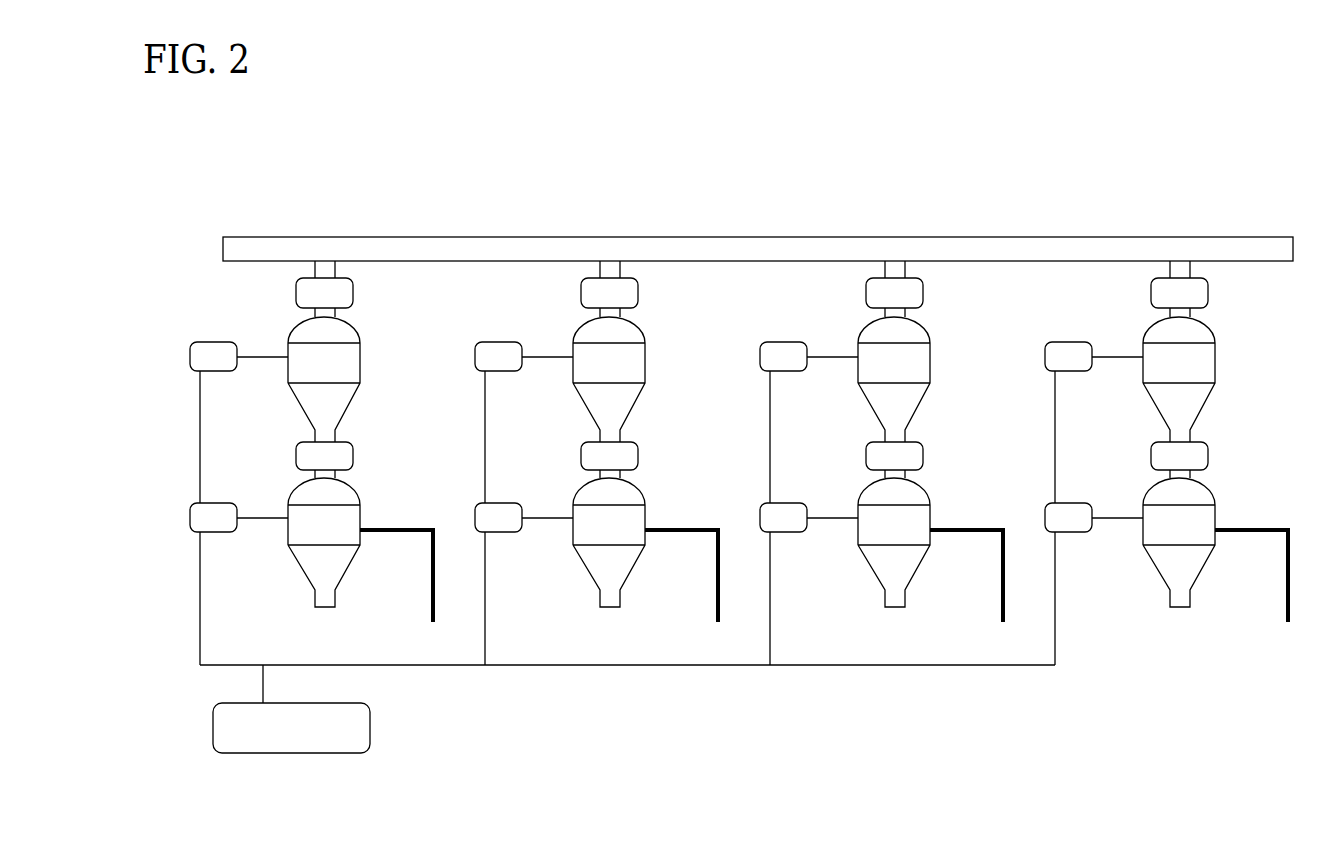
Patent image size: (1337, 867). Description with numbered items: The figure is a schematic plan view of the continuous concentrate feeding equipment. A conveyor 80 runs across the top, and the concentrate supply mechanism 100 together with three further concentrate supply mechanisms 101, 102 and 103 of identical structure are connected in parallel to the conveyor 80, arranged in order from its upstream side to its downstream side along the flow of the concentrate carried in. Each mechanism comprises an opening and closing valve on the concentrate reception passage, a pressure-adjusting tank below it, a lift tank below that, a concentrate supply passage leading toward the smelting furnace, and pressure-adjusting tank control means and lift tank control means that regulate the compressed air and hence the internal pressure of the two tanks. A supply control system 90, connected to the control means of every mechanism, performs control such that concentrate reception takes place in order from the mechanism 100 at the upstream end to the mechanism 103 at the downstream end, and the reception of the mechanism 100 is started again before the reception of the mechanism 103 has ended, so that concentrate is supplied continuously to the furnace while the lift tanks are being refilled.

The conveyor 80 is at (488, 245).
The concentrate supply mechanism 100 is at (276, 321).
The concentrate supply mechanism 101 is at (596, 463).
The concentrate supply mechanism 102 is at (881, 463).
The concentrate supply mechanism 103 is at (1166, 463).
The supply control system 90 is at (627, 709).